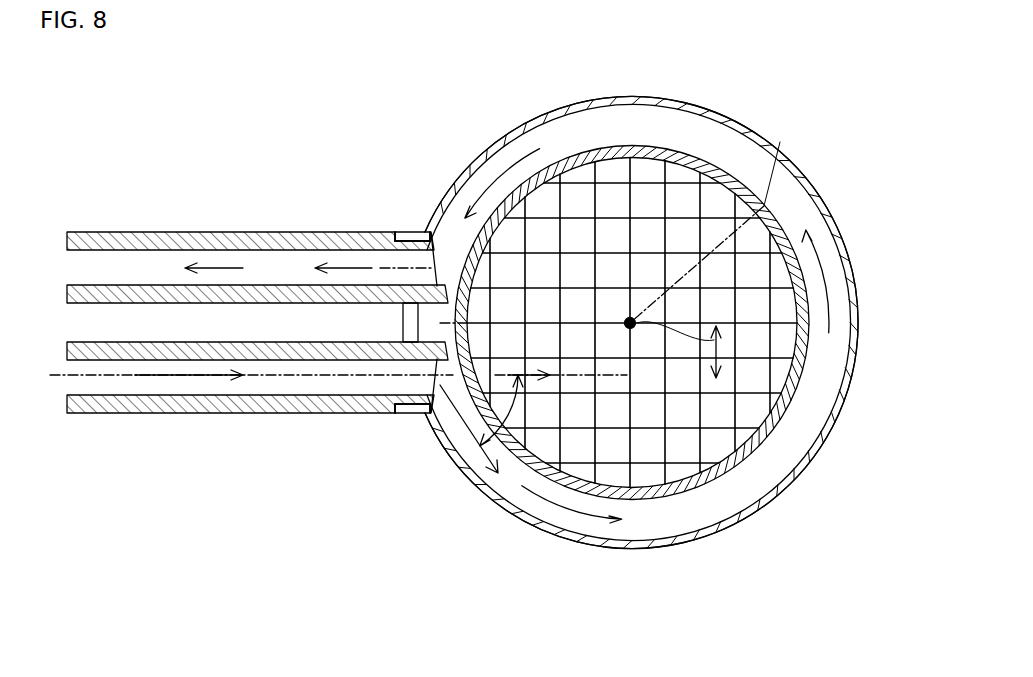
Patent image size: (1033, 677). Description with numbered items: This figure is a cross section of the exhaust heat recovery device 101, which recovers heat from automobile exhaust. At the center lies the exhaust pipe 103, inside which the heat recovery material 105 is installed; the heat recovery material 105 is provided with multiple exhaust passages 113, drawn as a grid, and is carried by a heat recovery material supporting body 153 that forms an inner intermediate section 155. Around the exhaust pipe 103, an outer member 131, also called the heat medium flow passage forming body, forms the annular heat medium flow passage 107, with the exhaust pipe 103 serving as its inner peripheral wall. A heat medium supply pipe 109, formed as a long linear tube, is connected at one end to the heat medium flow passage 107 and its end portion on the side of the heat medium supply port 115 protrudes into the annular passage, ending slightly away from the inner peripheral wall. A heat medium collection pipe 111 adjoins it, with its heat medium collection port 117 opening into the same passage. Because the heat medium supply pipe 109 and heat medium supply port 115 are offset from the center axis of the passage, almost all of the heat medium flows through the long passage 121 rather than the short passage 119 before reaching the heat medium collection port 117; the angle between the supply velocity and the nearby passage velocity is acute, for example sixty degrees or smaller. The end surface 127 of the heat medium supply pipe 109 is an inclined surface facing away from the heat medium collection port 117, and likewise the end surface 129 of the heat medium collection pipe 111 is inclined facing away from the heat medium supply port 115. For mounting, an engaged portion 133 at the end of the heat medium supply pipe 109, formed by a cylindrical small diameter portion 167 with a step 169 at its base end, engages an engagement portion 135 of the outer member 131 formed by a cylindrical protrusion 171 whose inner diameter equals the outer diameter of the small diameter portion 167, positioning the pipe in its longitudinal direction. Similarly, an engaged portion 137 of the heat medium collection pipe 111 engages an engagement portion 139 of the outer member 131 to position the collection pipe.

The exhaust heat recovery device 101 is at (727, 93).
The exhaust pipe 103 is at (627, 95).
The heat recovery material 105 is at (634, 205).
The heat medium flow passage 107 is at (732, 153).
The heat medium supply pipe 109 is at (225, 413).
The heat medium collection pipe 111 is at (222, 232).
The exhaust passages 113 is at (722, 445).
The heat medium supply port 115 is at (430, 416).
The heat medium collection port 117 is at (450, 258).
The short passage 119 is at (403, 310).
The long passage 121 is at (825, 358).
The end surface 127 is at (465, 470).
The end surface 129 is at (505, 220).
The outer member 131 is at (633, 548).
The engaged portion 133 is at (400, 413).
The engagement portion 135 is at (410, 413).
The engaged portion 137 is at (404, 231).
The engagement portion 139 is at (415, 230).
The heat recovery material supporting body 153 is at (774, 222).
The inner intermediate section 155 is at (780, 142).
The small diameter portion 167 is at (433, 243).
The step 169 is at (407, 284).
The cylindrical protrusion 171 is at (399, 231).